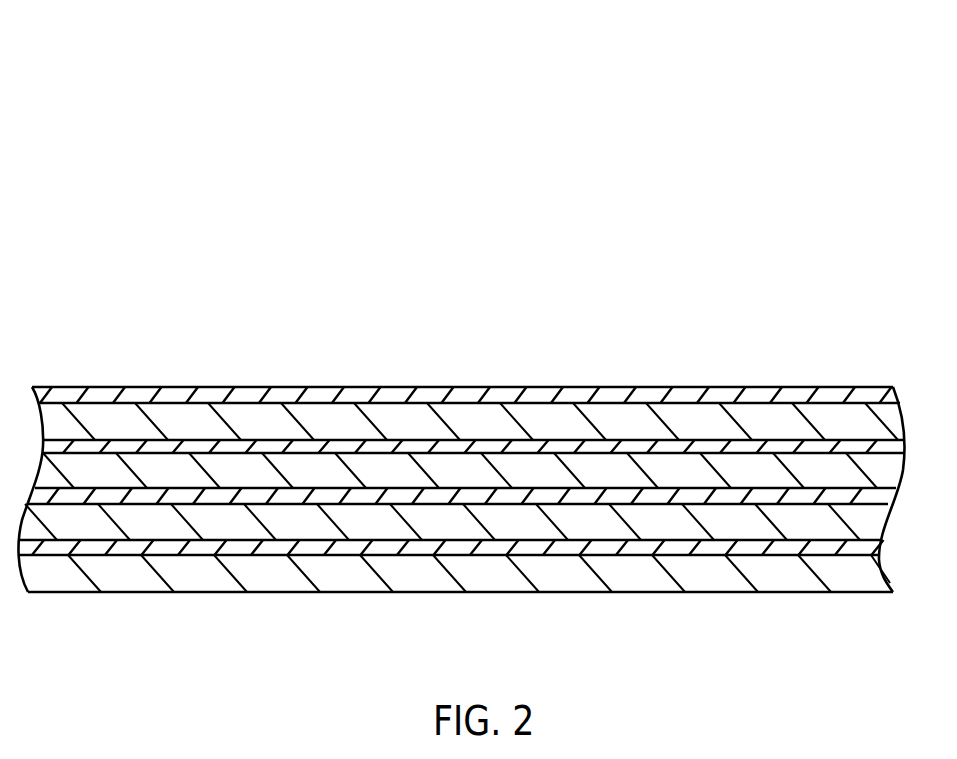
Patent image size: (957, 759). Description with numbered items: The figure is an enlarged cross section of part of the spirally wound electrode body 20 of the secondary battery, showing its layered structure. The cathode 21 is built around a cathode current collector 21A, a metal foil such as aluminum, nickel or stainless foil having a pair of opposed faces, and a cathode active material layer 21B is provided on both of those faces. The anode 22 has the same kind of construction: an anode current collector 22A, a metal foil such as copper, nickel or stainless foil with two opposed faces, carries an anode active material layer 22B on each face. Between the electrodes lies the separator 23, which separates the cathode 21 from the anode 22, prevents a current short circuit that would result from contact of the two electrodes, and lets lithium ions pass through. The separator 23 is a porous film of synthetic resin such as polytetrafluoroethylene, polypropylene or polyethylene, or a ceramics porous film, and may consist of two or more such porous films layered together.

The spirally wound electrode body 20 is at (826, 152).
The cathode 21 is at (50, 287).
The cathode current collector 21A is at (104, 445).
The cathode active material layer 21B is at (247, 477).
The anode 22 is at (442, 287).
The anode current collector 22A is at (492, 548).
The anode active material layer 22B is at (620, 573).
The separator 23 is at (793, 497).